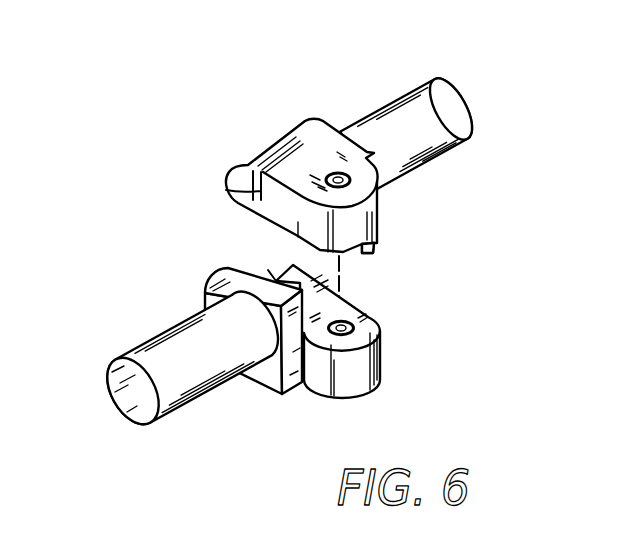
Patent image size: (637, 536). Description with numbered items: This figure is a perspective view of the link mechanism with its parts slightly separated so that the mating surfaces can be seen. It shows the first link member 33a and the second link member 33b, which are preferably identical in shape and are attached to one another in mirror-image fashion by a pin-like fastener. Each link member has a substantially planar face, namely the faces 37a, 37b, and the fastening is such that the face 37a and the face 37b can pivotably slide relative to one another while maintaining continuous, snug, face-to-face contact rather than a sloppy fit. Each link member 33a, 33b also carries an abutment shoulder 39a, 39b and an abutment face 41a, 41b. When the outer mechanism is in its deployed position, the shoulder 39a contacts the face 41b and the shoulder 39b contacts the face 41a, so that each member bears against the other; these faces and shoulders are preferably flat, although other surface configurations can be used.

The first link member 33a is at (382, 366).
The second link member 33b is at (300, 153).
The face 37a is at (363, 326).
The face 37b is at (236, 211).
The abutment shoulder 39a is at (358, 312).
The abutment shoulder 39b is at (231, 192).
The abutment face 41a is at (270, 266).
The abutment face 41b is at (372, 257).